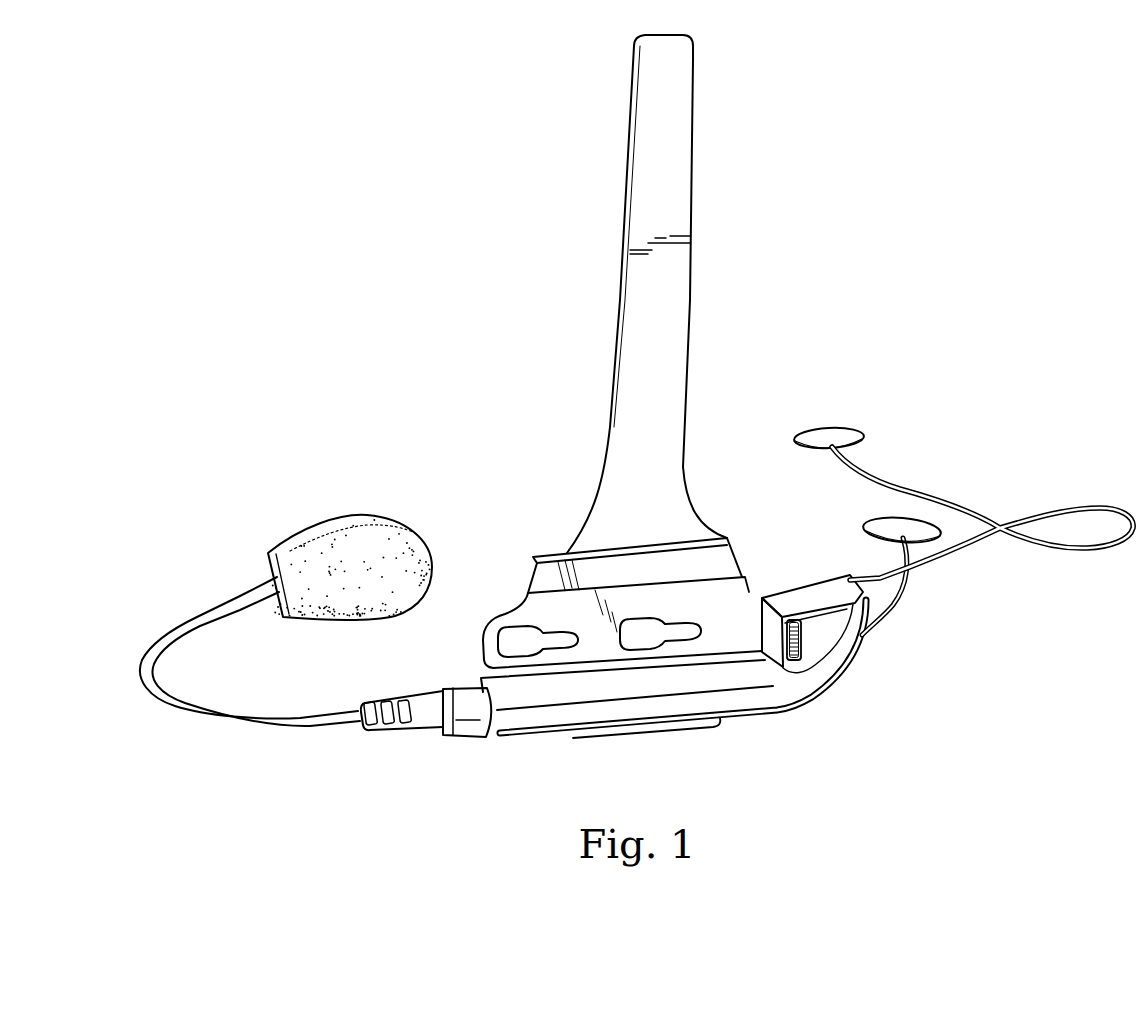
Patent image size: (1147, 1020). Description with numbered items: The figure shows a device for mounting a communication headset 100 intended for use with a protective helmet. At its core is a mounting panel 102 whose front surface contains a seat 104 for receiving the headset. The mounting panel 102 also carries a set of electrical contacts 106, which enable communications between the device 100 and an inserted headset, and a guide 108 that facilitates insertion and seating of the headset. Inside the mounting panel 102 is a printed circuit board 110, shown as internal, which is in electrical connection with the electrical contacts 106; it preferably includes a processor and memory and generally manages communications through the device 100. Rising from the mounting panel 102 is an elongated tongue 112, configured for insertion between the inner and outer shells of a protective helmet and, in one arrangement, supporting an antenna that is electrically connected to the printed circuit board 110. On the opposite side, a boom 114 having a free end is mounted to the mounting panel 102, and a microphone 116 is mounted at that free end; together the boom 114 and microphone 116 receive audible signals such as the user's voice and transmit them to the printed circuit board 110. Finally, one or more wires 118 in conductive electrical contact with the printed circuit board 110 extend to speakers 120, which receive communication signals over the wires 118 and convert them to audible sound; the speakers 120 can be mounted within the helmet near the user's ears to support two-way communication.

The device for mounting a communication headset 100 is at (170, 525).
The mounting panel 102 is at (823, 689).
The seat 104 is at (697, 683).
The electrical contacts 106 is at (790, 618).
The guide 108 is at (572, 615).
The printed circuit board 110 is at (830, 594).
The elongated tongue 112 is at (614, 386).
The boom 114 is at (203, 716).
The microphone 116 is at (362, 513).
The wires 118 is at (1028, 543).
The speakers 120 is at (865, 524).